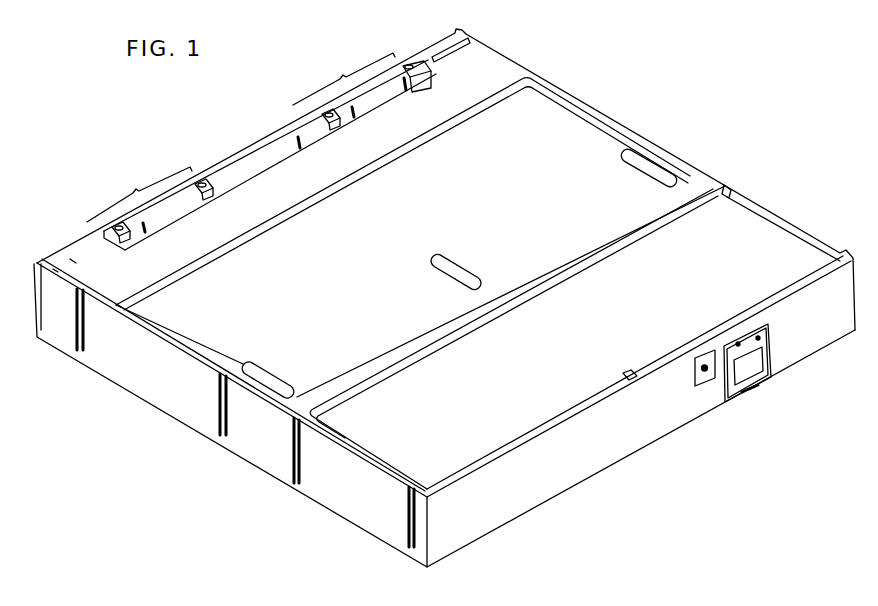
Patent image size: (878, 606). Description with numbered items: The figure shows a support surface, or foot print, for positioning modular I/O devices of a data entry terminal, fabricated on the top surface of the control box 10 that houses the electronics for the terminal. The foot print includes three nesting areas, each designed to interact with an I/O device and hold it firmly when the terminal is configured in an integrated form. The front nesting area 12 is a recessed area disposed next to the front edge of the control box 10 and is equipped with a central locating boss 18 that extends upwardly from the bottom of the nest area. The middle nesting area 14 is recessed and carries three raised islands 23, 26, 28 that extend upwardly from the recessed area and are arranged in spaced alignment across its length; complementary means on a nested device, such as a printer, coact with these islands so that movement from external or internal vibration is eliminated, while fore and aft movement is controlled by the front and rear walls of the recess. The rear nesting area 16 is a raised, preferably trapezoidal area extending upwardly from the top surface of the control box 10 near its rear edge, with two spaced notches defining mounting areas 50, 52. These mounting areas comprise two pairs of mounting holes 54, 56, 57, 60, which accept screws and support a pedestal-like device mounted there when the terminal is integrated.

The control box 10 is at (148, 427).
The front nesting area 12 is at (747, 233).
The middle nesting area 14 is at (570, 135).
The rear nesting area 16 is at (498, 60).
The central locating boss 18 is at (632, 377).
The raised island 23 is at (270, 377).
The raised island 26 is at (652, 167).
The raised island 28 is at (465, 277).
The mounting area 50 is at (183, 196).
The mounting area 52 is at (353, 107).
The mounting hole 54 is at (126, 238).
The mounting hole 56 is at (205, 188).
The mounting hole 57 is at (333, 116).
The mounting hole 60 is at (416, 75).